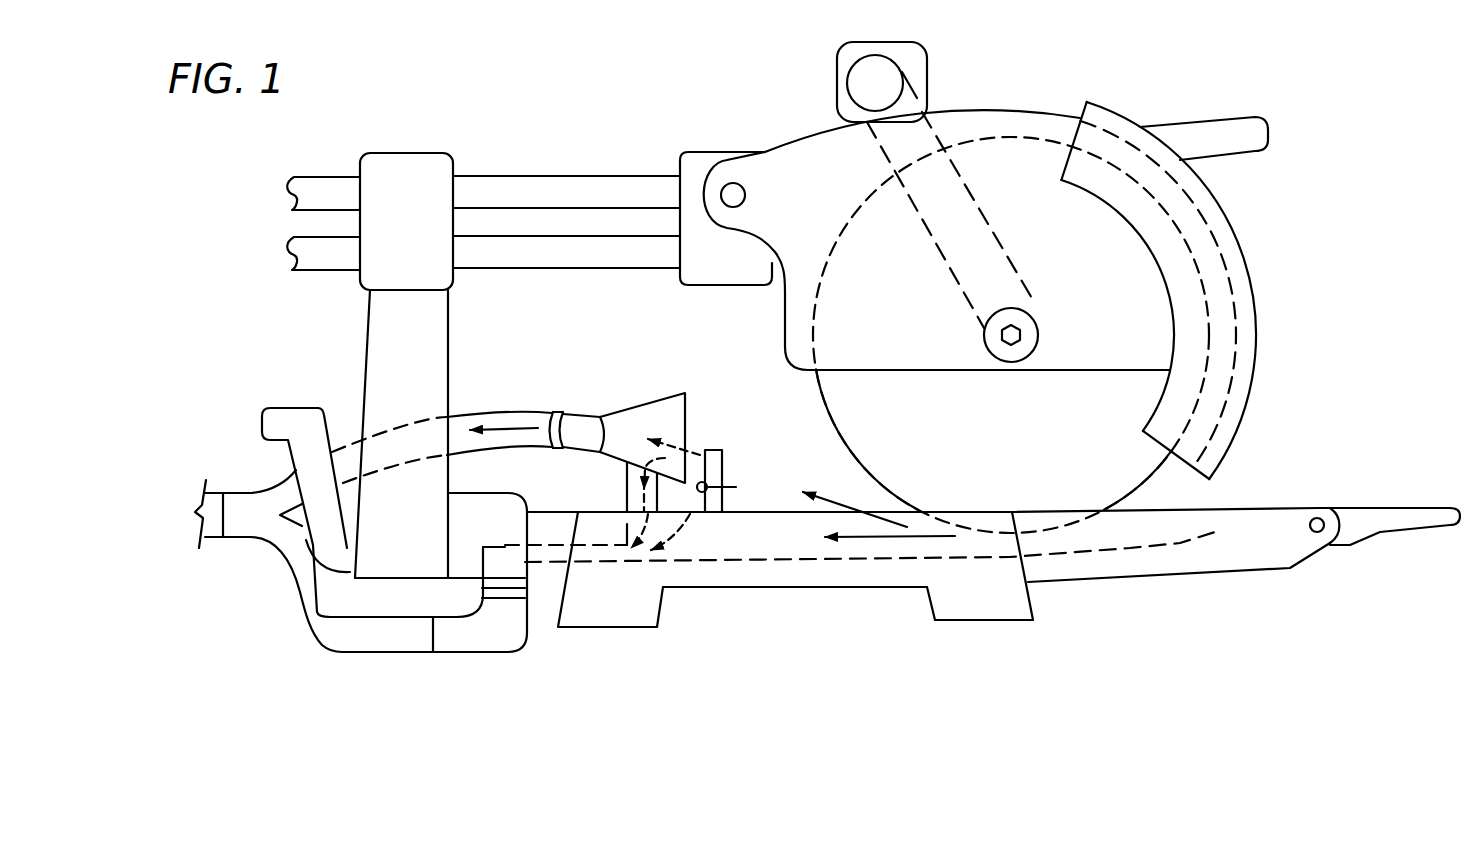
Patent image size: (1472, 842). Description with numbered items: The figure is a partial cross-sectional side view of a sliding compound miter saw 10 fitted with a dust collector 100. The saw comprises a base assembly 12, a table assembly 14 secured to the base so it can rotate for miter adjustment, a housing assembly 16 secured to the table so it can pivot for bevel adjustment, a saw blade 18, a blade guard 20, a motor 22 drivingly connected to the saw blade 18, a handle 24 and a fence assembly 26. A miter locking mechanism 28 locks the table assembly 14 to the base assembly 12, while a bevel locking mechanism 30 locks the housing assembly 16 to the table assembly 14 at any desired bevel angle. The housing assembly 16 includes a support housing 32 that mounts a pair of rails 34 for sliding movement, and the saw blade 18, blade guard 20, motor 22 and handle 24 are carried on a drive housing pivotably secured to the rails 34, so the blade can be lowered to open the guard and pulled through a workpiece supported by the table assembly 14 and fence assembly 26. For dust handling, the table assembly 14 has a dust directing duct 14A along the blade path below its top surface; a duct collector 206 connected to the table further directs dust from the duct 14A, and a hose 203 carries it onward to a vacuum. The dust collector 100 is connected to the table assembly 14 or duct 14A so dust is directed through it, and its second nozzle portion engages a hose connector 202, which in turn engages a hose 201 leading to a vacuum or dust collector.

The sliding compound miter saw 10 is at (1188, 97).
The base assembly 12 is at (978, 605).
The table assembly 14 is at (1207, 518).
The dust directing duct 14A is at (790, 547).
The housing assembly 16 is at (393, 563).
The saw blade 18 is at (1143, 401).
The blade guard 20 is at (1075, 110).
The motor 22 is at (898, 50).
The handle 24 is at (1240, 135).
The fence assembly 26 is at (717, 460).
The miter locking mechanism 28 is at (1336, 570).
The bevel locking mechanism 30 is at (341, 583).
The support housing 32 is at (377, 352).
The rails 34 is at (590, 253).
The dust collector 100 is at (641, 401).
The hose 201 is at (484, 417).
The hose connector 202 is at (557, 412).
The hose 203 is at (417, 640).
The duct collector 206 is at (505, 625).